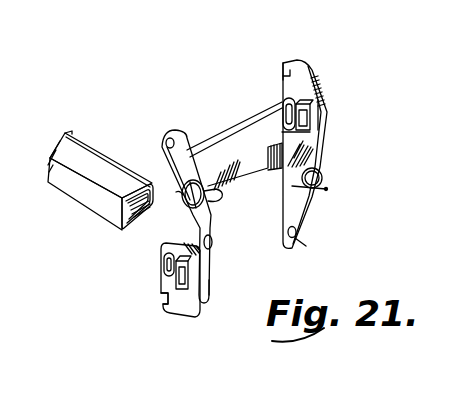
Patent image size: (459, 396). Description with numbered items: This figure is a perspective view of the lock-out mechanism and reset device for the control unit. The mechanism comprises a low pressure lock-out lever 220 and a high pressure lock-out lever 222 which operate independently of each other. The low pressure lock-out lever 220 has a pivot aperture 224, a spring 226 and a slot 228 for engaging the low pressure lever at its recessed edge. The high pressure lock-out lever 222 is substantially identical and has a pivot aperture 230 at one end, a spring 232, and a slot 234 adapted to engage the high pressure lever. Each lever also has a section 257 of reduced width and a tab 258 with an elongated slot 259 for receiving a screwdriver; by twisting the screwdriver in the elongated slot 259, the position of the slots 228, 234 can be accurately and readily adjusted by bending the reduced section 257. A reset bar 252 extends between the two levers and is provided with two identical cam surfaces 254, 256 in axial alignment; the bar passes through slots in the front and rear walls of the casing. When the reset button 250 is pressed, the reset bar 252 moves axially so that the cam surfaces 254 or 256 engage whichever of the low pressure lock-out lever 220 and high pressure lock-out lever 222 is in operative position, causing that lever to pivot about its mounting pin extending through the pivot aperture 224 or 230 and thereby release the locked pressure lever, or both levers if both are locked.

The reset button 250 is at (51, 154).
The pivot aperture 230 is at (167, 138).
The reset bar 252 is at (233, 133).
The spring 232 is at (206, 207).
The cam surface 254 is at (221, 194).
The high pressure lock-out lever 222 is at (212, 243).
The low pressure lock-out lever 220 is at (327, 128).
The slot 228 is at (283, 75).
The section of reduced width 257 is at (319, 113).
The tab 258 is at (284, 99).
The elongated slot 259 is at (286, 111).
The spring 226 is at (328, 188).
The pivot aperture 224 is at (293, 238).
The cam surface 256 is at (158, 239).
The slot 234 is at (165, 299).